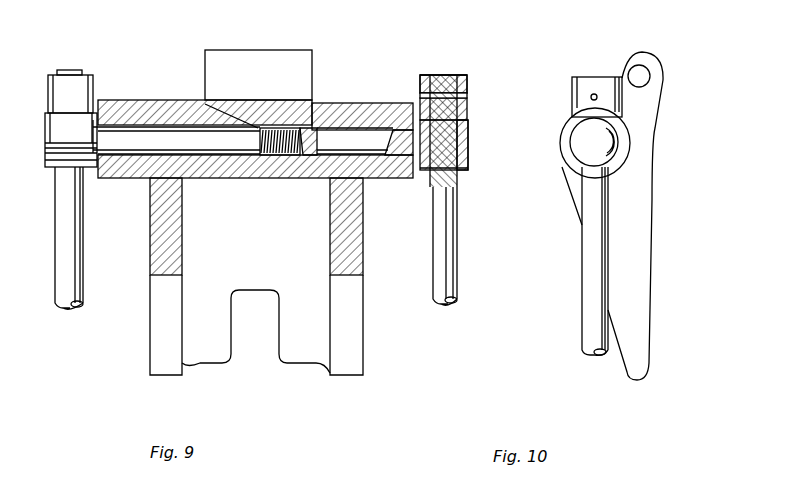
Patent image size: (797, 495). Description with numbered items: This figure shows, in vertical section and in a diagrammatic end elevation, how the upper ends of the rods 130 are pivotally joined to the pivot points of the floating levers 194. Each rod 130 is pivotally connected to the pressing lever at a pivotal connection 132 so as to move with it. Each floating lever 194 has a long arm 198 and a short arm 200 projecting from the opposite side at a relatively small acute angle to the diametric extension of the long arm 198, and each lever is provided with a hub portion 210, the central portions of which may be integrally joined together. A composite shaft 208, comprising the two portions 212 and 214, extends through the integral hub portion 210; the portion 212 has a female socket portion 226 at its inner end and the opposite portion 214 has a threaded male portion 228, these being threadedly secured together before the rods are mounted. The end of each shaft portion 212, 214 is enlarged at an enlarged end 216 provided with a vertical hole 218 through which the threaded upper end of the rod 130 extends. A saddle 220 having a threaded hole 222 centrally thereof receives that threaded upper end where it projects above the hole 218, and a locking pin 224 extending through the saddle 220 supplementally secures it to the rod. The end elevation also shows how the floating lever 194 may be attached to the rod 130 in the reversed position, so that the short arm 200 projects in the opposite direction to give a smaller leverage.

In FIG. 9, the rod 130 is at (77, 241).
In FIG. 10, the rod 130 is at (590, 296).
In FIG. 9, the pivotal connection 132 is at (45, 130).
In FIG. 10, the pivotal connection 132 is at (580, 160).
In FIG. 9, the floating lever 194 is at (148, 232).
In FIG. 9, the long arm 198 is at (155, 350).
In FIG. 10, the long arm 198 is at (645, 352).
In FIG. 9, the short arm 200 is at (265, 62).
In FIG. 10, the short arm 200 is at (650, 92).
In FIG. 9, the composite shaft 208 is at (310, 130).
In FIG. 9, the hub portion 210 is at (133, 100).
In FIG. 9, the shaft portion 212 is at (371, 137).
In FIG. 9, the shaft portion 214 is at (123, 133).
In FIG. 9, the enlarged end 216 is at (48, 163).
In FIG. 9, the vertical hole 218 is at (468, 127).
In FIG. 9, the saddle 220 is at (88, 76).
In FIG. 10, the saddle 220 is at (608, 85).
In FIG. 9, the threaded hole 222 is at (458, 78).
In FIG. 9, the locking pin 224 is at (463, 97).
In FIG. 10, the locking pin 224 is at (592, 95).
In FIG. 9, the female socket portion 226 is at (279, 128).
In FIG. 9, the threaded male portion 228 is at (207, 105).